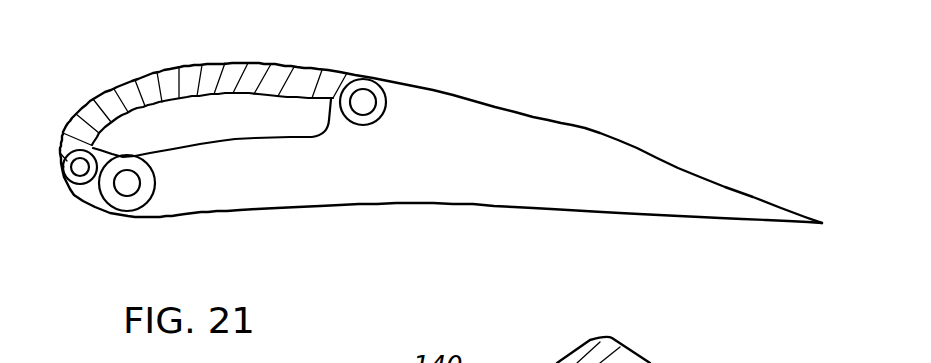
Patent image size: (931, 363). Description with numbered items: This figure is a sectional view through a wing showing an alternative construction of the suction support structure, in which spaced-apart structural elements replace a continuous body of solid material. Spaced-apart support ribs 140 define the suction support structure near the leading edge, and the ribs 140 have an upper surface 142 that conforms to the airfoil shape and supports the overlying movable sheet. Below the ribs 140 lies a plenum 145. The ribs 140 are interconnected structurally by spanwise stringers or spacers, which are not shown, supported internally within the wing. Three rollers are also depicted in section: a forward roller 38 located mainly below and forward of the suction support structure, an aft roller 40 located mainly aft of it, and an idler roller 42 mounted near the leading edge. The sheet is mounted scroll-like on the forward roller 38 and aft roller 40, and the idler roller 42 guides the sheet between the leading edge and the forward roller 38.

The support rib 140 is at (273, 57).
The upper surface 142 is at (155, 70).
The plenum 145 is at (220, 140).
The forward roller 38 is at (127, 209).
The aft roller 40 is at (380, 117).
The idler roller 42 is at (78, 184).